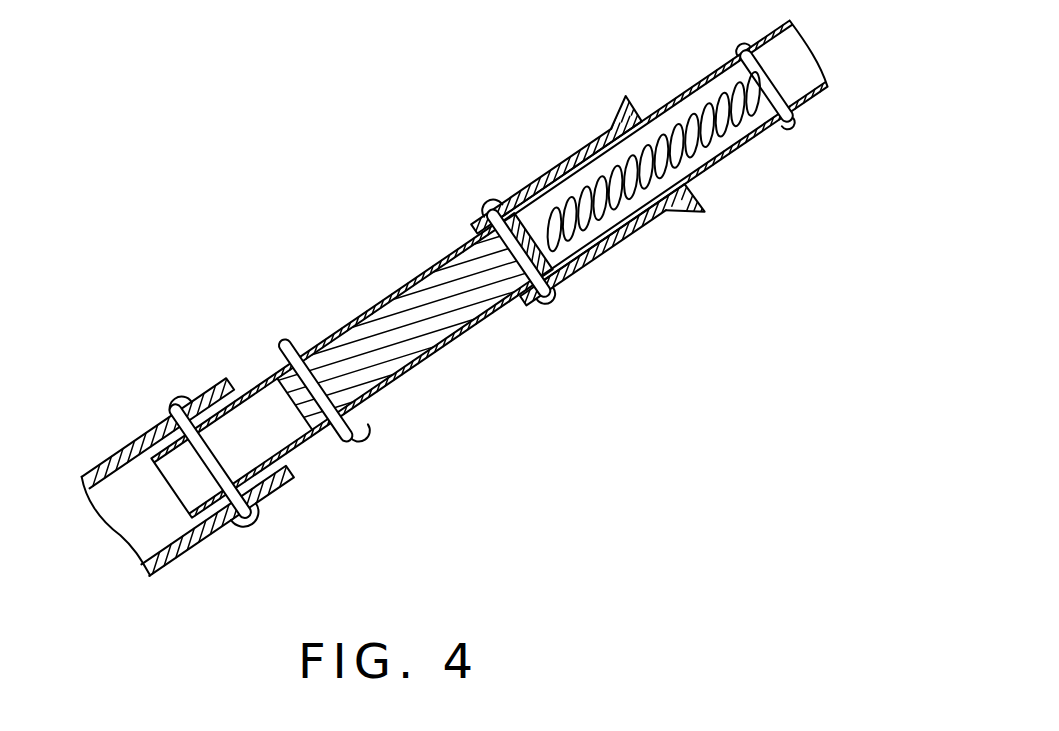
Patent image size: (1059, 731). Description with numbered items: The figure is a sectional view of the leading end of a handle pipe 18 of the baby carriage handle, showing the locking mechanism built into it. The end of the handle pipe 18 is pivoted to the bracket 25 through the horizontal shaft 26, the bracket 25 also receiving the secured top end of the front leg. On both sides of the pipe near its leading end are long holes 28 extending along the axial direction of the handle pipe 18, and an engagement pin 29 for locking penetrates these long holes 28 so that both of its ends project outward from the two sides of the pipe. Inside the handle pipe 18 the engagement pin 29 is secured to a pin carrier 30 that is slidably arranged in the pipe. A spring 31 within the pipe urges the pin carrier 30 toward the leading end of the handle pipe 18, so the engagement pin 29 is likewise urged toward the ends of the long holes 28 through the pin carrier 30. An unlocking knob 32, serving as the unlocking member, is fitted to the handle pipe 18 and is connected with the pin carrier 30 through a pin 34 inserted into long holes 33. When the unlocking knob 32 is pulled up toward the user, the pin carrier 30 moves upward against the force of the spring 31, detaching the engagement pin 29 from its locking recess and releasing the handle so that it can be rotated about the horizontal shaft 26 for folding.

The handle pipe 18 is at (698, 87).
The bracket 25 is at (120, 447).
The horizontal shaft 26 is at (217, 478).
The long holes 28 is at (360, 313).
The engagement pin 29 is at (352, 430).
The pin carrier 30 is at (450, 320).
The spring 31 is at (710, 147).
The unlocking knob 32 is at (602, 127).
The long holes 33 is at (560, 176).
The pin 34 is at (518, 262).